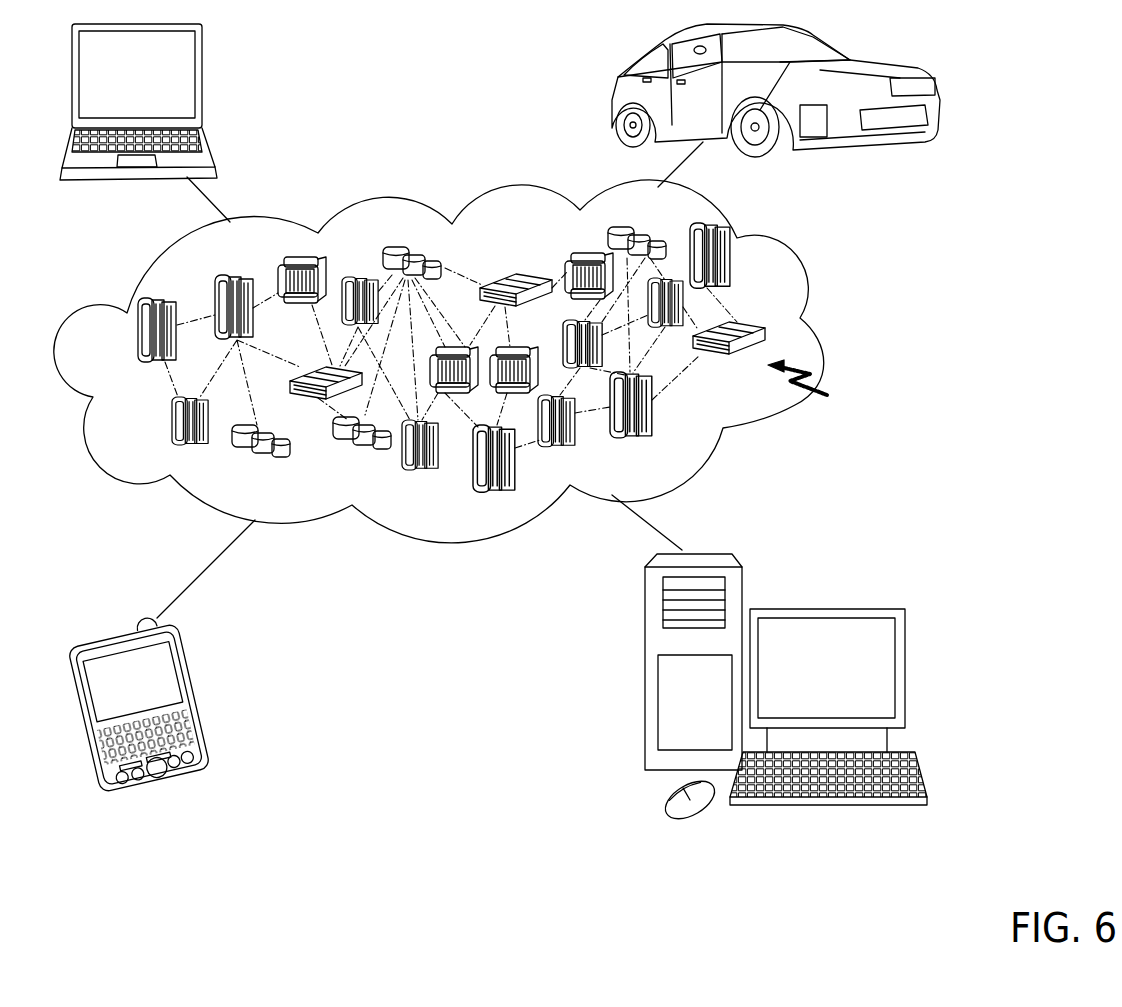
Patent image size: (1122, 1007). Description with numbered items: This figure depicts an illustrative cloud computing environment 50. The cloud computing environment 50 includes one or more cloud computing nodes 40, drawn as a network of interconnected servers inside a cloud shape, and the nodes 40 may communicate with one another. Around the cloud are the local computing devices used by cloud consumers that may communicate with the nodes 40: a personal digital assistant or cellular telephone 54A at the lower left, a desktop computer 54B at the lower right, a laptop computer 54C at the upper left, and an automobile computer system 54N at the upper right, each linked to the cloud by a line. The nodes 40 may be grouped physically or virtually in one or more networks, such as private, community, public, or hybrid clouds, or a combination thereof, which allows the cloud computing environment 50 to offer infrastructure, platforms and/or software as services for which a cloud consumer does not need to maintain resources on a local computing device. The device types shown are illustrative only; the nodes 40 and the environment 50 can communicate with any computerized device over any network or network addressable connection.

The laptop computer 54C is at (204, 82).
The automobile computer system 54N is at (612, 95).
The personal digital assistant (PDA) or cellular telephone 54A is at (196, 700).
The desktop computer 54B is at (823, 609).
The cloud computing environment 50 is at (828, 338).
The cloud computing nodes 40 is at (815, 385).